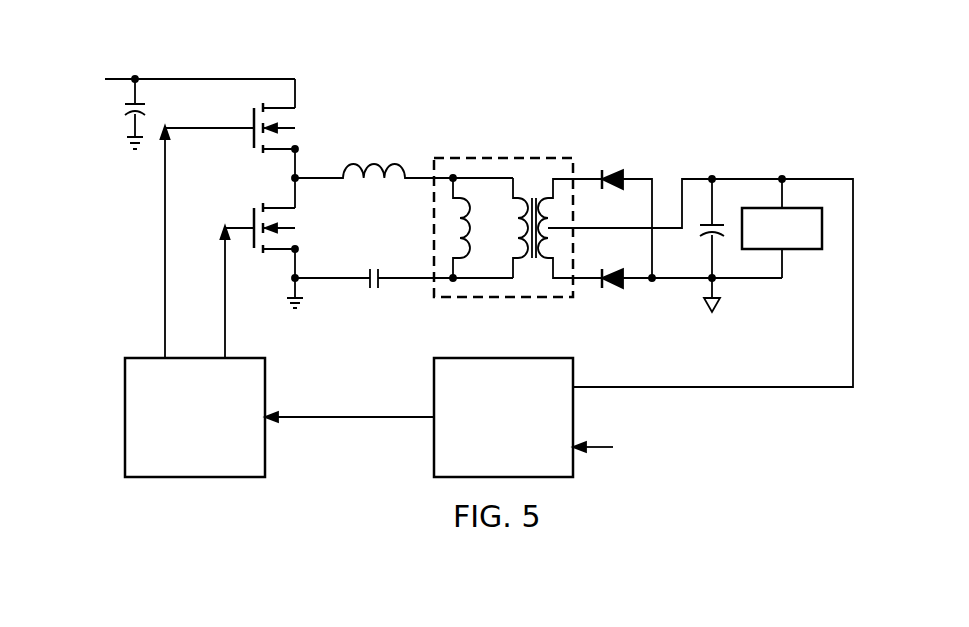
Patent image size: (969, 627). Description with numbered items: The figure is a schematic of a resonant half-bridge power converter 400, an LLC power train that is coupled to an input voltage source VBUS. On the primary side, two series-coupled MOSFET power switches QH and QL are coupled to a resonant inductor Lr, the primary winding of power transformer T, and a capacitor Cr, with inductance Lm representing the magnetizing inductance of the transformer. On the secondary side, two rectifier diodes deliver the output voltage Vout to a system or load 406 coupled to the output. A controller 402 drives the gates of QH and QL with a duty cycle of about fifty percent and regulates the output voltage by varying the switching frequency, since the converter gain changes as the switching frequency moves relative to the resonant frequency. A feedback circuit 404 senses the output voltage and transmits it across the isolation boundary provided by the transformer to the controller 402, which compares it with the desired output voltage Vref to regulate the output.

The resonant half-bridge power converter 400 is at (651, 78).
The controller 402 is at (195, 478).
The feedback circuit 404 is at (502, 358).
The load 406 is at (801, 250).